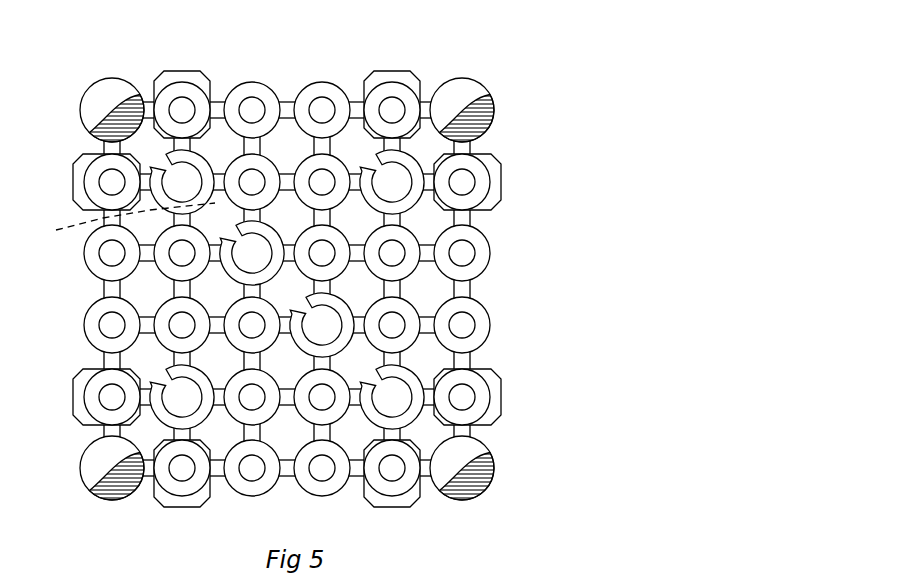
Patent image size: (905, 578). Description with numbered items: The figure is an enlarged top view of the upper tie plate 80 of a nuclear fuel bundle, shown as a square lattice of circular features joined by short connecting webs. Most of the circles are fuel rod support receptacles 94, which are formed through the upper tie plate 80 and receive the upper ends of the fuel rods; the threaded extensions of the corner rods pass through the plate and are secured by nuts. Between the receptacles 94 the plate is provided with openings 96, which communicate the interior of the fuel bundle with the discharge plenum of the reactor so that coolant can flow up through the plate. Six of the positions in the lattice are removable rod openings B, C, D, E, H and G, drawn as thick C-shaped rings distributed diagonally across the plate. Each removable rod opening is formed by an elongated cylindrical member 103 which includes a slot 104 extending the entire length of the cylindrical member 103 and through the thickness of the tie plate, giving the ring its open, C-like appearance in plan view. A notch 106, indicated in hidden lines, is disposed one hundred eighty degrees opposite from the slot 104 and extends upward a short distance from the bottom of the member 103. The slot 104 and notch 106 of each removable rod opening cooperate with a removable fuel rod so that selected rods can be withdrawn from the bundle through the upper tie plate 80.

The upper tie plate 80 is at (486, 72).
The fuel rod support receptacle 94 is at (177, 258).
The opening 96 is at (355, 440).
The elongated cylindrical member 103 is at (172, 116).
The slot 104 is at (158, 162).
The notch 106 is at (56, 230).
The removable rod opening B is at (188, 116).
The removable rod opening C is at (262, 243).
The removable rod opening D is at (328, 317).
The removable rod opening E is at (397, 391).
The removable rod opening G is at (396, 176).
The removable rod opening H is at (170, 410).